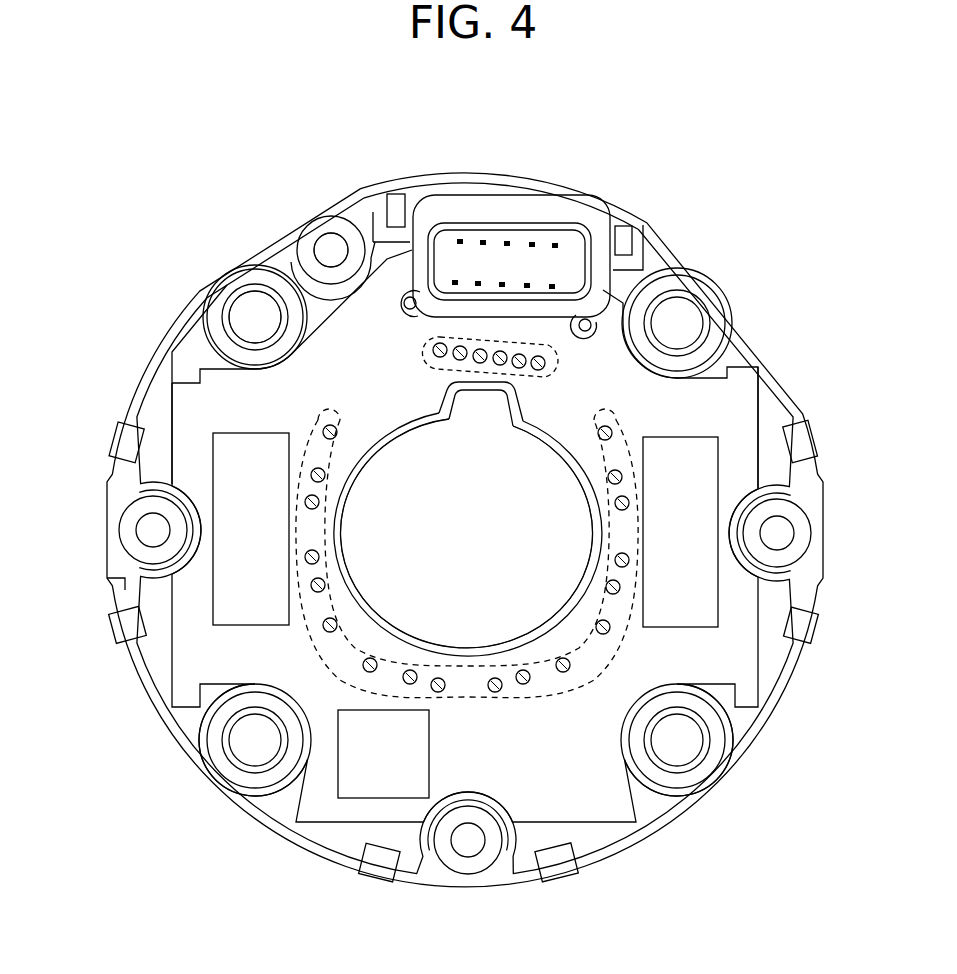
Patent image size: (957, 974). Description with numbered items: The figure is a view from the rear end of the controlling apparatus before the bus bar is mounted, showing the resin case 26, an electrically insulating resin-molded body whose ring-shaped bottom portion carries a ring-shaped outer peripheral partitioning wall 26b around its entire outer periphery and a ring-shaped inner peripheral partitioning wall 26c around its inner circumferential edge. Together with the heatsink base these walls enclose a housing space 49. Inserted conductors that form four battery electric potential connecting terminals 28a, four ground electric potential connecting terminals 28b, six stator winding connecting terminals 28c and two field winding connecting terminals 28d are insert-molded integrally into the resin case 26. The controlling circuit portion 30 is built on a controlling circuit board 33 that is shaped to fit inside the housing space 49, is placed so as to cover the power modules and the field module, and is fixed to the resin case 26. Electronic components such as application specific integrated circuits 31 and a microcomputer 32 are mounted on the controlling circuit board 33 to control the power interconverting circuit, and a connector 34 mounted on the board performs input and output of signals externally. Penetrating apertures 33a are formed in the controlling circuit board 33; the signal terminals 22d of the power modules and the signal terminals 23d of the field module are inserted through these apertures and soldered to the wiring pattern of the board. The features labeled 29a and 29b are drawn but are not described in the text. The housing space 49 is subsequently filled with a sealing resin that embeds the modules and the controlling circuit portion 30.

The signal terminal 22d is at (328, 476).
The signal terminal 23d is at (494, 364).
The resin case 26 is at (148, 378).
The outer peripheral partitioning wall 26b is at (192, 337).
The inner peripheral partitioning wall 26c is at (352, 556).
The battery electric potential connecting terminal 28a is at (220, 312).
The ground electric potential connecting terminal 28b is at (310, 236).
The stator winding connecting terminal 28c is at (122, 444).
The field winding connecting terminal 28d is at (396, 195).
The screw hole 29a is at (245, 310).
The positioning hole 29b is at (330, 240).
The controlling circuit portion 30 is at (749, 401).
The application specific integrated circuit 31 is at (230, 622).
The microcomputer 32 is at (360, 790).
The controlling circuit board 33 is at (752, 420).
The penetrating aperture 33a is at (332, 625).
The connector 34 is at (558, 225).
The housing space 49 is at (120, 586).